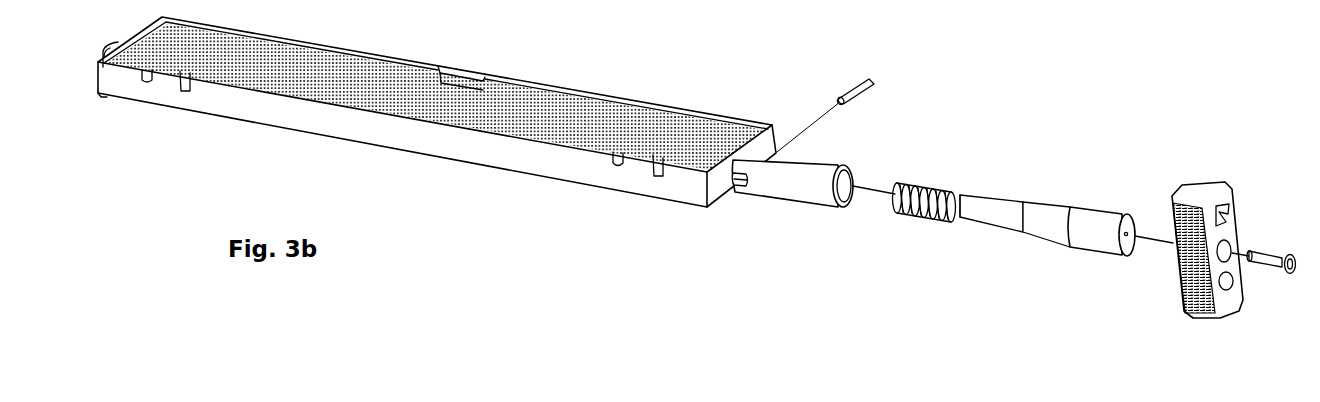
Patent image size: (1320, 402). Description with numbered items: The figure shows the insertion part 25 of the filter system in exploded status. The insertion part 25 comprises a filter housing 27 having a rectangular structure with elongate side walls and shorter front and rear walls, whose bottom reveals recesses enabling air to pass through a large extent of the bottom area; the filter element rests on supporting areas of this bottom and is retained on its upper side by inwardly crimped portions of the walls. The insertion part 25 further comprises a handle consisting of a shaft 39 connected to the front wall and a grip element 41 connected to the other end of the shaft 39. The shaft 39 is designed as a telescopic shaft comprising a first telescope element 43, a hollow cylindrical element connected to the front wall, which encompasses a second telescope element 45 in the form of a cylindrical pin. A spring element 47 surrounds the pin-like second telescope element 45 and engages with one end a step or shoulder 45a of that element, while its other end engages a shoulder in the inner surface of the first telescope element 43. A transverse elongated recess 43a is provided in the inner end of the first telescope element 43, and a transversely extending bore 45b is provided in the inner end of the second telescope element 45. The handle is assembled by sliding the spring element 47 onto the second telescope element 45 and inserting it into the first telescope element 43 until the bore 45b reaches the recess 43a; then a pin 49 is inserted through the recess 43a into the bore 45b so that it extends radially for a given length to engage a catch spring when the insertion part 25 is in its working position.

The insertion part 25 is at (636, 226).
The filter housing 27 is at (432, 62).
The shaft 39 is at (1046, 163).
The grip element 41 is at (1201, 185).
The first telescope element 43 is at (812, 158).
The transverse elongated recess 43a is at (742, 188).
The second telescope element 45 is at (995, 213).
The step or shoulder 45a is at (1023, 203).
The transversely extending bore 45b is at (950, 217).
The spring element 47 is at (897, 213).
The pin 49 is at (872, 80).